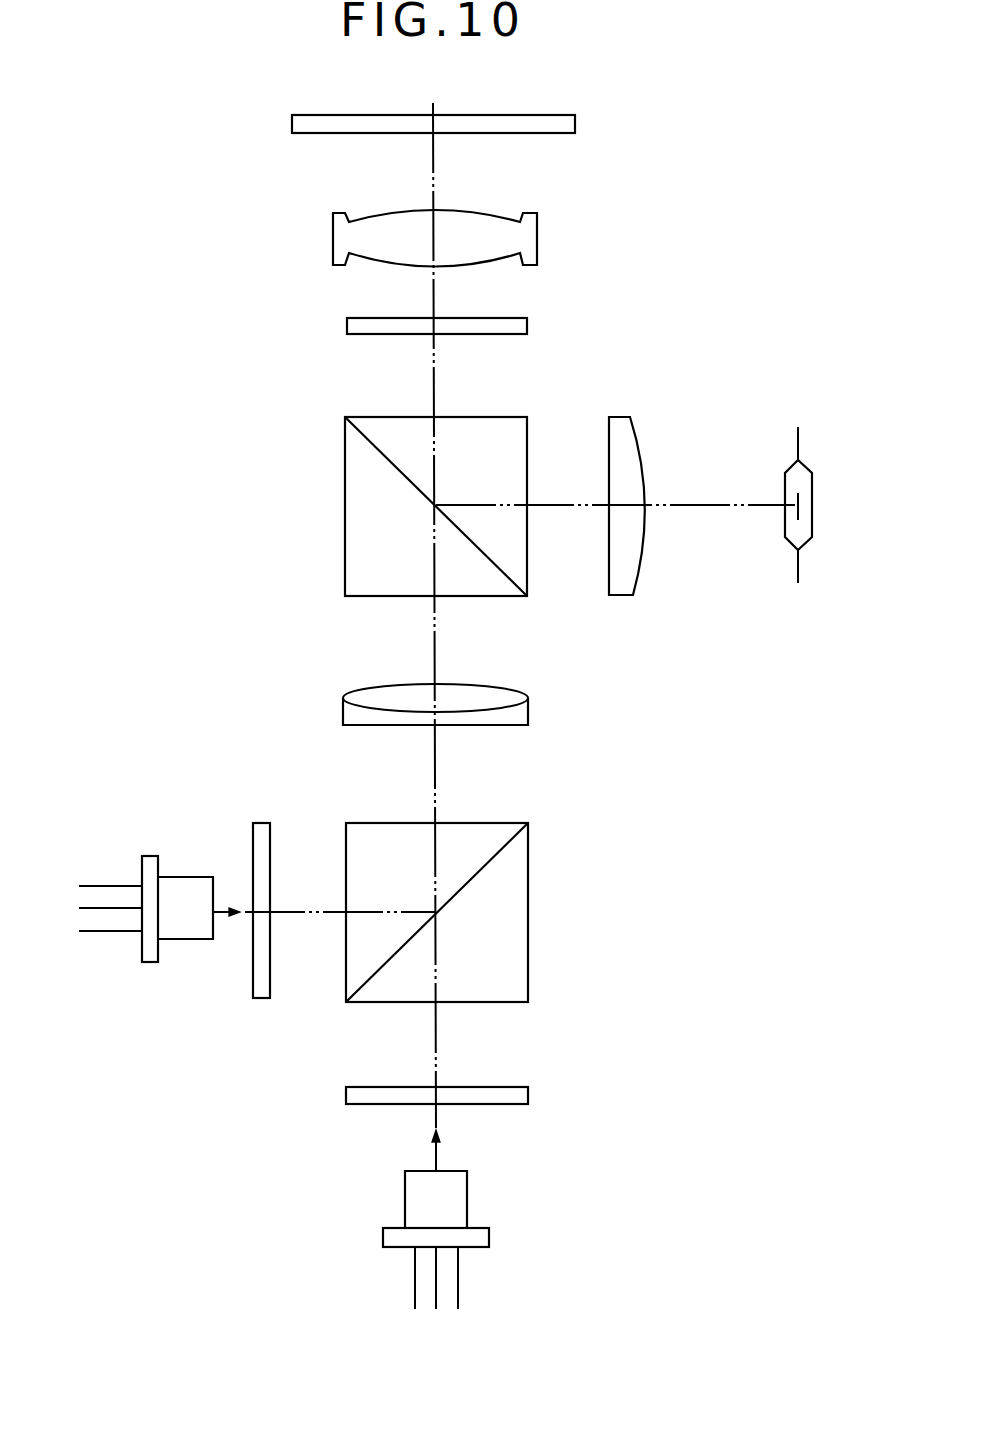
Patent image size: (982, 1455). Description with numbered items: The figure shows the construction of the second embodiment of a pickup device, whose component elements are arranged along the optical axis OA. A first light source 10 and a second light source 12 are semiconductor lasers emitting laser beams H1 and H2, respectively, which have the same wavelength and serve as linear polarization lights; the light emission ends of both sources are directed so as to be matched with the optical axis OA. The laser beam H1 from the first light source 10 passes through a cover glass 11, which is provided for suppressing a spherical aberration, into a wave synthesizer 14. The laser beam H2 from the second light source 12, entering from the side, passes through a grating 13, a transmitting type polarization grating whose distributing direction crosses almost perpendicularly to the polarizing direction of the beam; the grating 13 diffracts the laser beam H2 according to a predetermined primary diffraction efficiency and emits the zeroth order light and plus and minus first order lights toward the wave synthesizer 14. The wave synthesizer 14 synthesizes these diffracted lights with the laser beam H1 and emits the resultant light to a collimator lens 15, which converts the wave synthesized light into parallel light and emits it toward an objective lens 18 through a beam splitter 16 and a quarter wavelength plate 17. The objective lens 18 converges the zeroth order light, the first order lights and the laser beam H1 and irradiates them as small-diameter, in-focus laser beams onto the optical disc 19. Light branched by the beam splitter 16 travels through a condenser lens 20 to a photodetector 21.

The first light source 10 is at (467, 1202).
The cover glass 11 is at (528, 1095).
The second light source 12 is at (187, 877).
The grating 13 is at (258, 823).
The wave synthesizer 14 is at (528, 870).
The collimator lens 15 is at (528, 706).
The beam splitter 16 is at (527, 417).
The ¼ wavelength plate 17 is at (528, 325).
The objective lens 18 is at (538, 226).
The optical disc 19 is at (577, 124).
The condenser lens 20 is at (629, 417).
The photodetector 21 is at (810, 465).
The laser beam H1 is at (436, 1157).
The laser beam H2 is at (223, 918).
The optical axis OA is at (437, 782).